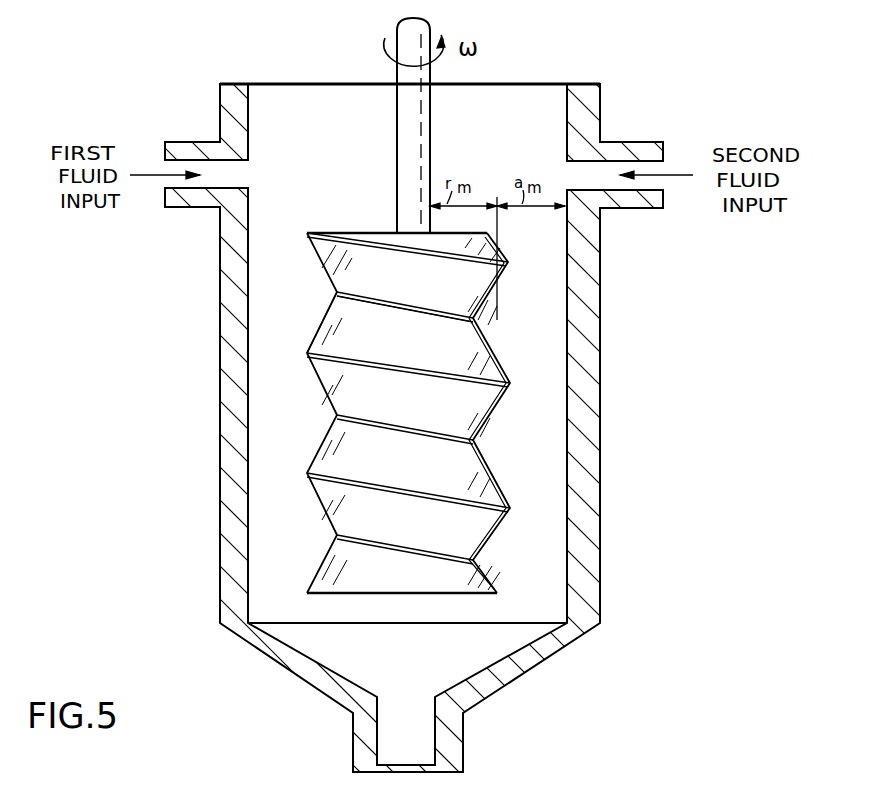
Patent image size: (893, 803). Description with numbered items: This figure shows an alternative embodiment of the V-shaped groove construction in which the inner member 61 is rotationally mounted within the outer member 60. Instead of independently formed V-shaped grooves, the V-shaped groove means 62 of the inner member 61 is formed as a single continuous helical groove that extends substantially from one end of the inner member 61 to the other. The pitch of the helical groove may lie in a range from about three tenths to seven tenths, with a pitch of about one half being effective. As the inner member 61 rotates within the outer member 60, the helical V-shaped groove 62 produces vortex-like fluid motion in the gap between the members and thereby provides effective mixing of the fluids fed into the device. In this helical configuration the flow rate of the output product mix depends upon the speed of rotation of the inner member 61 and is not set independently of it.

The outer member 60 is at (598, 455).
The inner member 61 is at (337, 432).
The V-shaped groove means 62 is at (337, 292).